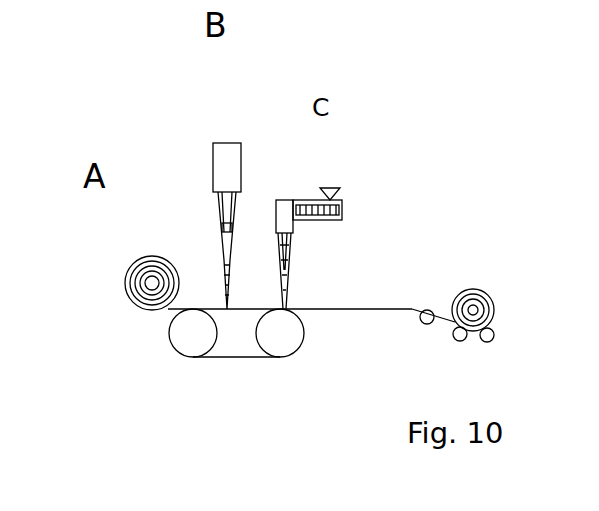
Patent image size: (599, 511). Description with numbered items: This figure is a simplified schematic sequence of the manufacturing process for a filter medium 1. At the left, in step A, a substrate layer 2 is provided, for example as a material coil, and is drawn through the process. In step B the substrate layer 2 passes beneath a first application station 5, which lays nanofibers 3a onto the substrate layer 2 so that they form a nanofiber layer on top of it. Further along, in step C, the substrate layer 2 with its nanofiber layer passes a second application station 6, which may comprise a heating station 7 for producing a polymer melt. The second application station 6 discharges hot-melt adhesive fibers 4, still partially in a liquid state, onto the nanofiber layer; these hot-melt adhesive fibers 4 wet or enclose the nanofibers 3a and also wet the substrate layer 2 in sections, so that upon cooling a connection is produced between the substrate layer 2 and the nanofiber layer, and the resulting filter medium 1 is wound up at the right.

The filter medium 1 is at (493, 294).
The substrate layer 2 is at (125, 285).
The nanofibers 3a is at (222, 247).
The hot-melt adhesive fibers 4 is at (287, 265).
The first application station 5 is at (213, 180).
The second application station 6 is at (284, 200).
The heating station 7 is at (345, 212).